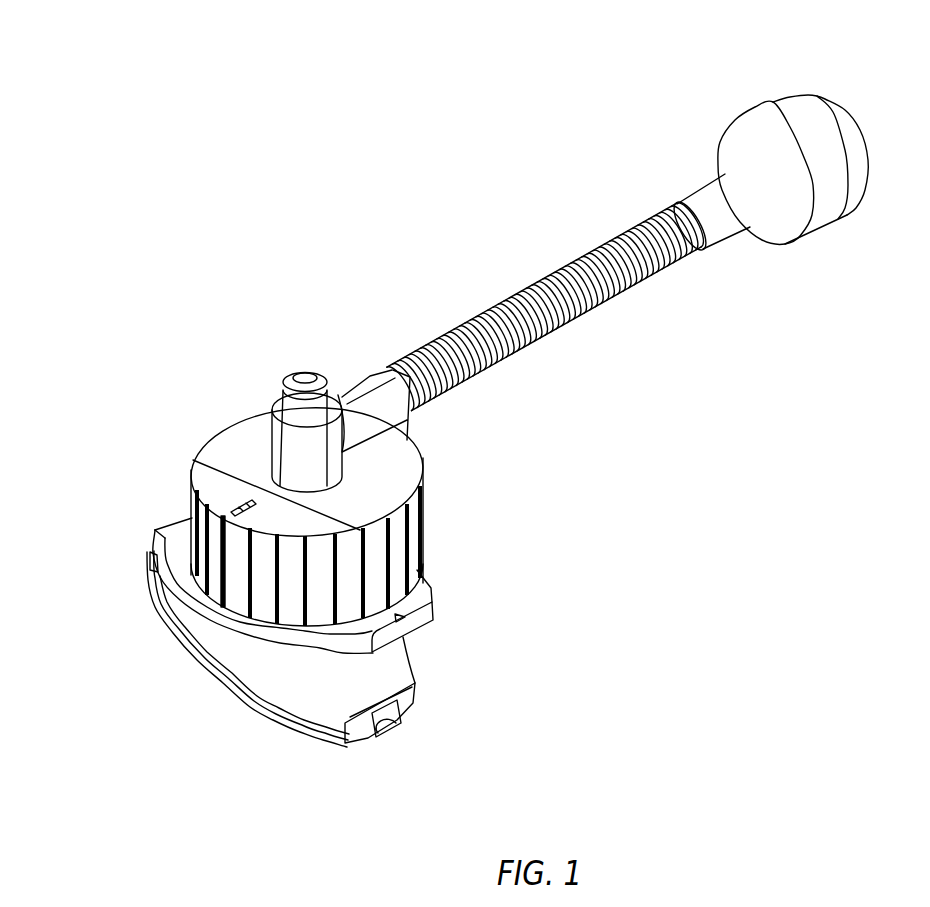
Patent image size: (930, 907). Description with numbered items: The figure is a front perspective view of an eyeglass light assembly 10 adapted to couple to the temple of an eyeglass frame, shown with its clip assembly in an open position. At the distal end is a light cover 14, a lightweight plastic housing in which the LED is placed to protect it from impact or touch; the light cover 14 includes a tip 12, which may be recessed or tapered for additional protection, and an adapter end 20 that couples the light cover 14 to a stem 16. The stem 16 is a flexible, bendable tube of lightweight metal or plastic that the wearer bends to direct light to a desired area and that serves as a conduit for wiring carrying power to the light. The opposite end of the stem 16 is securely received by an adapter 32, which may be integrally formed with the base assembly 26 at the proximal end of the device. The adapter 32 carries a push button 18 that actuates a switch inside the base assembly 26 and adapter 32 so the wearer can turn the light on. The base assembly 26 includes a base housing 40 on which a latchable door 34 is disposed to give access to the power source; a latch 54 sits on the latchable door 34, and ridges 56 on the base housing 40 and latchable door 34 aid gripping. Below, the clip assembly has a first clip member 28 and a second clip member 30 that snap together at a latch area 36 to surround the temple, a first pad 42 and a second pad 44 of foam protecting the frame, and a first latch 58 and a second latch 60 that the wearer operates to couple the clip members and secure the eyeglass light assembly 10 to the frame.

The eyeglass light assembly 10 is at (298, 105).
The tip 12 is at (818, 105).
The light cover 14 is at (770, 112).
The stem 16 is at (542, 283).
The push button 18 is at (303, 378).
The adapter end 20 is at (715, 190).
The base assembly 26 is at (140, 462).
The first clip member 28 is at (432, 588).
The second clip member 30 is at (178, 628).
The adapter 32 is at (366, 388).
The latchable door 34 is at (208, 458).
The latch area 36 is at (440, 675).
The base housing 40 is at (245, 428).
The first pad 42 is at (240, 665).
The second pad 44 is at (270, 700).
The latch 54 is at (213, 516).
The ridges 56 is at (230, 552).
The first latch 58 is at (408, 620).
The second latch 60 is at (390, 733).